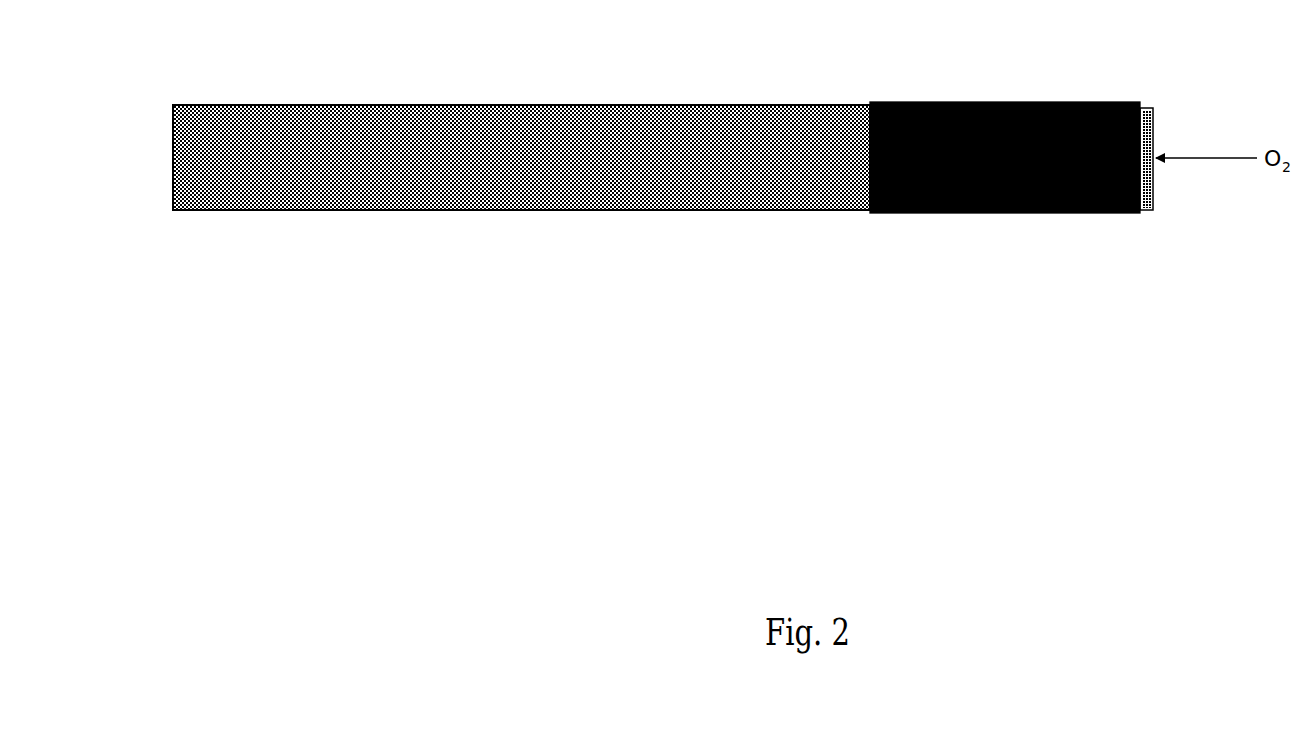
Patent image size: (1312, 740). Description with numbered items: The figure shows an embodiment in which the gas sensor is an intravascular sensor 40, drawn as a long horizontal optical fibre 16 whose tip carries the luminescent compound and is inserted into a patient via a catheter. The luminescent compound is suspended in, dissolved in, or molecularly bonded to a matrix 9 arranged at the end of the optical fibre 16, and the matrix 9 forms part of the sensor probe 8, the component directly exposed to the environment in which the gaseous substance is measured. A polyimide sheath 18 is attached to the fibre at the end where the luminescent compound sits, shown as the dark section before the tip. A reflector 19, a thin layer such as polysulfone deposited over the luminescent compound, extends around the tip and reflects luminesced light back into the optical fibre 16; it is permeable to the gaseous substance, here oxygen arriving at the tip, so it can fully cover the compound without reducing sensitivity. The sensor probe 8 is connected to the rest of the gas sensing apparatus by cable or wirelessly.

The sensor probe 8 is at (1035, 308).
The matrix 9 is at (1146, 192).
The optical fibre 16 is at (338, 190).
The polyimide sheath 18 is at (963, 215).
The reflector 19 is at (1153, 122).
The intravascular sensor 40 is at (485, 398).